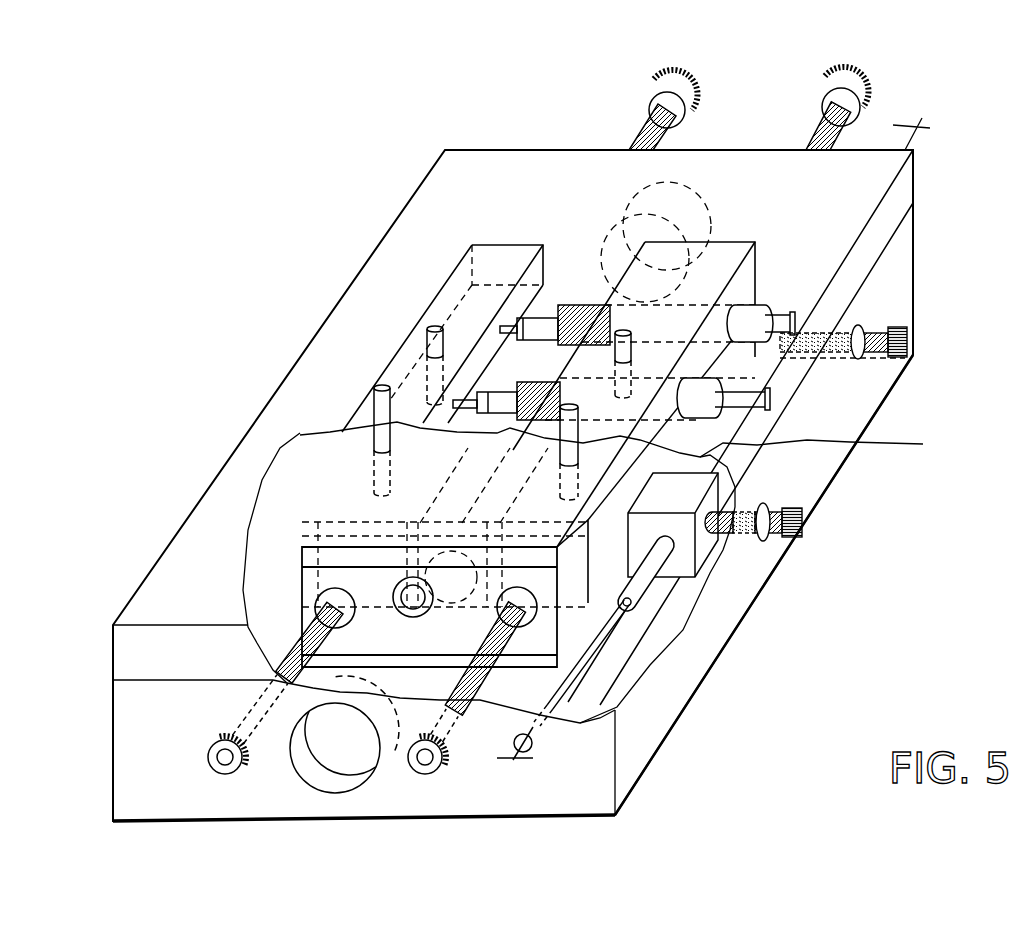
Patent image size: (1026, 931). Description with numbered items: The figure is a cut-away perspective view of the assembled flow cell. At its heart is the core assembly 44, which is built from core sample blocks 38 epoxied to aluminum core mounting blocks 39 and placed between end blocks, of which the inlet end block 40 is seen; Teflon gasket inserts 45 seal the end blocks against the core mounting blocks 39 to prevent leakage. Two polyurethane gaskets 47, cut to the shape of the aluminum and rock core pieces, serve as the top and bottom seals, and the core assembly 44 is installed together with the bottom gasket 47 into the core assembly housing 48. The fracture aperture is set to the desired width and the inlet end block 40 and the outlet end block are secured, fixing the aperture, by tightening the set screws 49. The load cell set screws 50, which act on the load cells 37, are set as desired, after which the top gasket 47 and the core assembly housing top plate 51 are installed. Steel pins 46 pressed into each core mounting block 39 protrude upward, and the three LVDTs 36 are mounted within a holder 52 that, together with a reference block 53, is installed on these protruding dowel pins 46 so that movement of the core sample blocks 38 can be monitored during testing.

The LVDT 36 is at (698, 388).
The load cell 37 is at (704, 552).
The core sample block 38 is at (470, 531).
The core mounting block 39 is at (351, 486).
The inlet end block 40 is at (311, 597).
The core assembly 44 is at (295, 570).
The gasket insert 45 is at (340, 542).
The pin 46 is at (600, 440).
The gasket 47 is at (566, 650).
The core assembly housing 48 is at (669, 693).
The set screw 49 is at (649, 91).
The load cell set screw 50 is at (915, 342).
The core assembly housing top plate 51 is at (902, 197).
The holder 52 is at (746, 278).
The reference block 53 is at (450, 292).